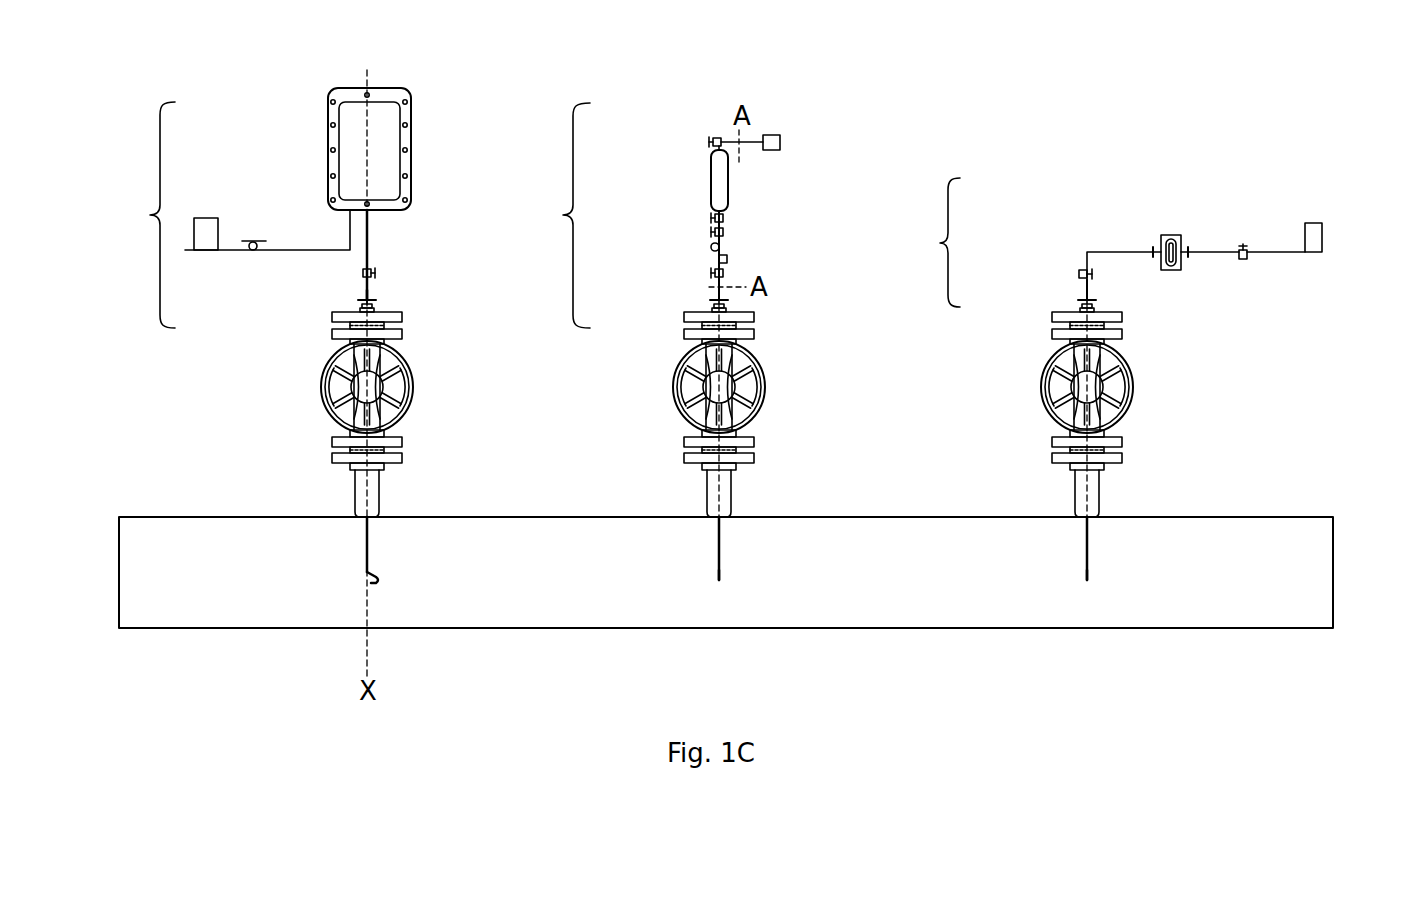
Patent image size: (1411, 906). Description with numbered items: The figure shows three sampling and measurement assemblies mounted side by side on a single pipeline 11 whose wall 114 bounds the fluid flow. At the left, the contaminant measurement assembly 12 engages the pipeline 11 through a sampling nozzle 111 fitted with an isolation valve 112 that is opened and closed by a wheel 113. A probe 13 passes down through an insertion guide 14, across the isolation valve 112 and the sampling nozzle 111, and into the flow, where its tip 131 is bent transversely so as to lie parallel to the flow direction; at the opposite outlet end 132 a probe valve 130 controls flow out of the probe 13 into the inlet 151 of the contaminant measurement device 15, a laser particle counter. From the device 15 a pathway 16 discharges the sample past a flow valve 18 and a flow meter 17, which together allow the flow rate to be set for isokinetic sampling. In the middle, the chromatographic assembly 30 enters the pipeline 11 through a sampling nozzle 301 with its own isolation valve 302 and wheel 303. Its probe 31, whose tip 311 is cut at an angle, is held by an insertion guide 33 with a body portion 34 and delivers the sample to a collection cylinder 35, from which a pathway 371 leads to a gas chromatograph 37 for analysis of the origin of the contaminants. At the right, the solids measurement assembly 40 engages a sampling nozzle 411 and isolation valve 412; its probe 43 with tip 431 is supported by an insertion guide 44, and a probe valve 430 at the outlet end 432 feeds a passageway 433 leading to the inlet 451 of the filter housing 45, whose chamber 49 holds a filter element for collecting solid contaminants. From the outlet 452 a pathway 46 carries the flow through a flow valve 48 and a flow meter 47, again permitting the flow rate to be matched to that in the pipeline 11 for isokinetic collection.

The pipeline 11 is at (152, 517).
The wall 114 is at (478, 517).
The contaminant measurement assembly 12 is at (147, 215).
The probe 13 is at (368, 292).
The tip 131 is at (366, 584).
The outlet end 132 is at (362, 298).
The insertion guide 14 is at (376, 304).
The contaminant measurement device 15 is at (411, 138).
The inlet 151 is at (370, 233).
The probe valve 130 is at (375, 272).
The pathway 16 is at (280, 250).
The flow meter 17 is at (216, 218).
The flow valve 18 is at (254, 241).
The sampling nozzle 111 is at (380, 497).
The isolation valve 112 is at (402, 318).
The wheel 113 is at (413, 387).
The chromatographic assembly 30 is at (562, 215).
The probe 31 is at (719, 553).
The tip 311 is at (719, 578).
The sampling nozzle 301 is at (732, 497).
The isolation valve 302 is at (754, 318).
The wheel 303 is at (765, 387).
The insertion guide 33 is at (730, 306).
The body portion 34 is at (715, 302).
The collection cylinder 35 is at (711, 178).
The gas chromatograph 37 is at (780, 142).
The pathway 371 is at (745, 142).
The solids measurement assembly 40 is at (935, 242).
The probe 43 is at (1087, 553).
The tip 431 is at (1087, 578).
The outlet end 432 is at (1085, 286).
The passageway 433 is at (1096, 250).
The probe valve 430 is at (1079, 274).
The insertion guide 44 is at (1096, 305).
The filter housing 45 is at (1168, 242).
The inlet 451 is at (1153, 250).
The outlet 452 is at (1188, 255).
The pathway 46 is at (1212, 254).
The flow meter 47 is at (1322, 226).
The flow valve 48 is at (1244, 250).
The chamber 49 is at (1184, 245).
The sampling nozzle 411 is at (1100, 497).
The isolation valve 412 is at (1122, 318).